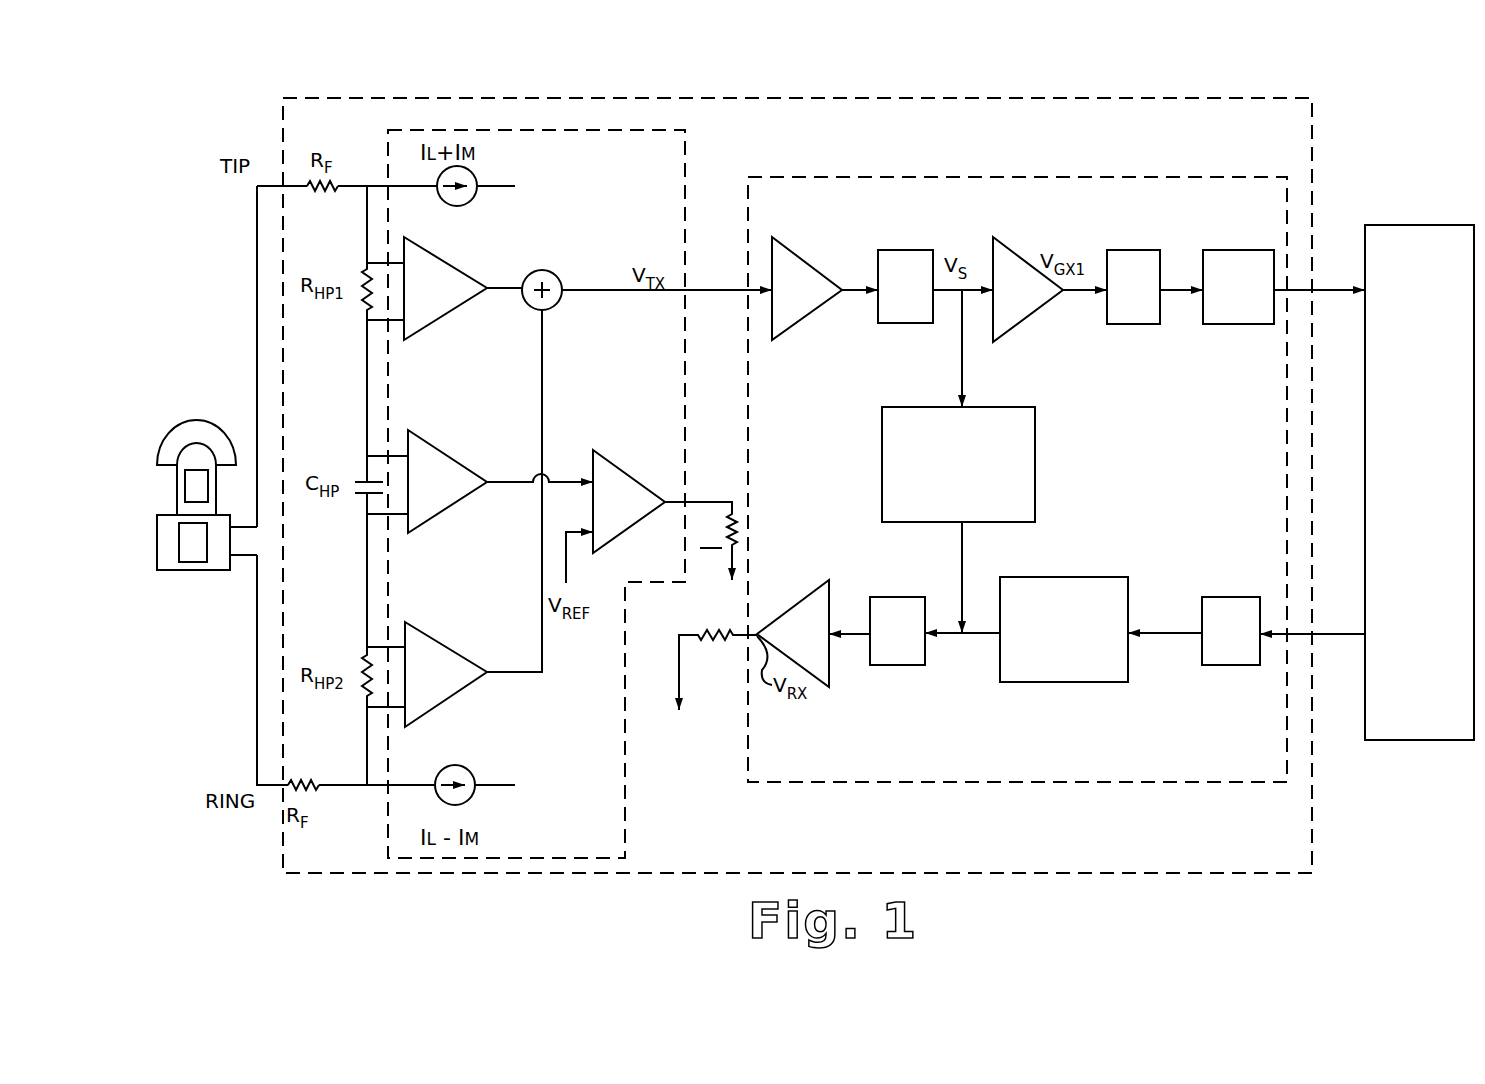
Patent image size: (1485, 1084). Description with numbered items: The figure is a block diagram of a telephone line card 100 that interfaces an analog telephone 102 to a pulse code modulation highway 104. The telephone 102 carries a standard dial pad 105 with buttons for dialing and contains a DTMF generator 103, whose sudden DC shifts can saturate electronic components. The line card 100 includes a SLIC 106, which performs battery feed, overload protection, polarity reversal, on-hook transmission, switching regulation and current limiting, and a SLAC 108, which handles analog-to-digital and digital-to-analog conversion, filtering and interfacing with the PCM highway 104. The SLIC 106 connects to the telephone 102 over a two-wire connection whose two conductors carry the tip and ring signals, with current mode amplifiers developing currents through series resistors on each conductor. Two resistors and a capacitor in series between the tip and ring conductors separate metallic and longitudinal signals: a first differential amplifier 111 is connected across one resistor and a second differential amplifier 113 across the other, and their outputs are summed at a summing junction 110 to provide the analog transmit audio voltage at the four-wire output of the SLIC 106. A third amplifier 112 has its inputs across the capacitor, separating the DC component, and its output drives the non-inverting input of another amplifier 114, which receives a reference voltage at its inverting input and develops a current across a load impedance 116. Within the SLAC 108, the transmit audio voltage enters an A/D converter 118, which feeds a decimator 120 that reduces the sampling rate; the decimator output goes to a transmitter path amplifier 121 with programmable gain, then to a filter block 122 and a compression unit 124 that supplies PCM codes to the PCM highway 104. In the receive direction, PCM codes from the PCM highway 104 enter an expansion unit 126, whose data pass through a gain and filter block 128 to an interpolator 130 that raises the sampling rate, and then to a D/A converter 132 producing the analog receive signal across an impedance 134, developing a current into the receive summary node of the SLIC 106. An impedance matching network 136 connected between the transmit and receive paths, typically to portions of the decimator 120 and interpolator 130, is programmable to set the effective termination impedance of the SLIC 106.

The telephone line card 100 is at (413, 98).
The analog telephone 102 is at (178, 423).
The DTMF generator 103 is at (196, 558).
The PCM highway 104 is at (1420, 225).
The dial pad 105 is at (186, 485).
The SLIC 106 is at (685, 188).
The SLAC 108 is at (785, 177).
The summing junction 110 is at (552, 271).
The first differential amplifier 111 is at (445, 263).
The third amplifier 112 is at (450, 455).
The second differential amplifier 113 is at (450, 648).
The amplifier 114 is at (628, 472).
The load impedance 116 is at (740, 540).
The A/D converter 118 is at (808, 258).
The decimator 120 is at (910, 250).
The transmitter path amplifier 121 is at (1025, 260).
The filter block 122 is at (1130, 255).
The compression unit 124 is at (1235, 250).
The expansion unit 126 is at (1230, 597).
The gain and filter block 128 is at (1103, 577).
The interpolator 130 is at (897, 597).
The D/A converter 132 is at (785, 612).
The impedance 134 is at (710, 632).
The impedance matching network 136 is at (1037, 440).